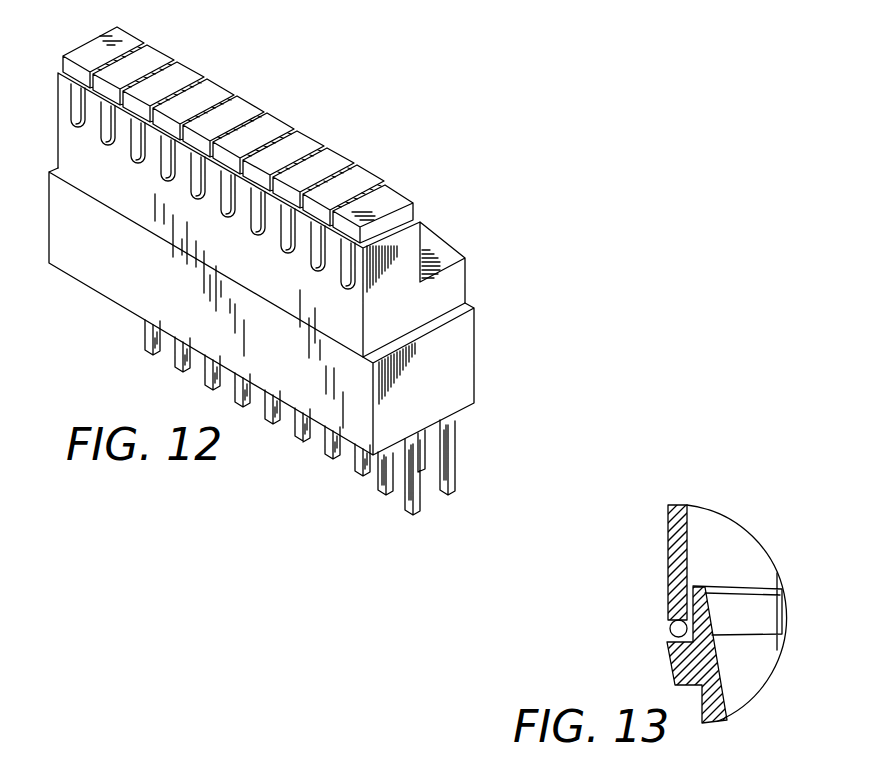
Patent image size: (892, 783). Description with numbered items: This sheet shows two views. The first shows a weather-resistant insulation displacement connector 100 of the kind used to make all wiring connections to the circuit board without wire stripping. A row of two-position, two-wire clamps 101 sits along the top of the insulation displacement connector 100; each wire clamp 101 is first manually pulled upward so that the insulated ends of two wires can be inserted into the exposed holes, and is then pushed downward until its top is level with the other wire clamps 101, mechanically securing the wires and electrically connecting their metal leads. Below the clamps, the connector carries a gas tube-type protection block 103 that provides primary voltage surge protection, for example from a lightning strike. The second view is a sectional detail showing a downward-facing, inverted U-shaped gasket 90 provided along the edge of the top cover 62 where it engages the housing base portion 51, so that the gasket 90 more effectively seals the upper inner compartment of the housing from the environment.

In FIG. 12, the insulation displacement connector 100 is at (456, 289).
In FIG. 12, the wire clamp 101 is at (183, 71).
In FIG. 12, the gas tube-type protection block 103 is at (450, 376).
In FIG. 13, the top cover 62 is at (677, 557).
In FIG. 13, the gasket 90 is at (668, 628).
In FIG. 13, the housing base portion 51 is at (697, 664).